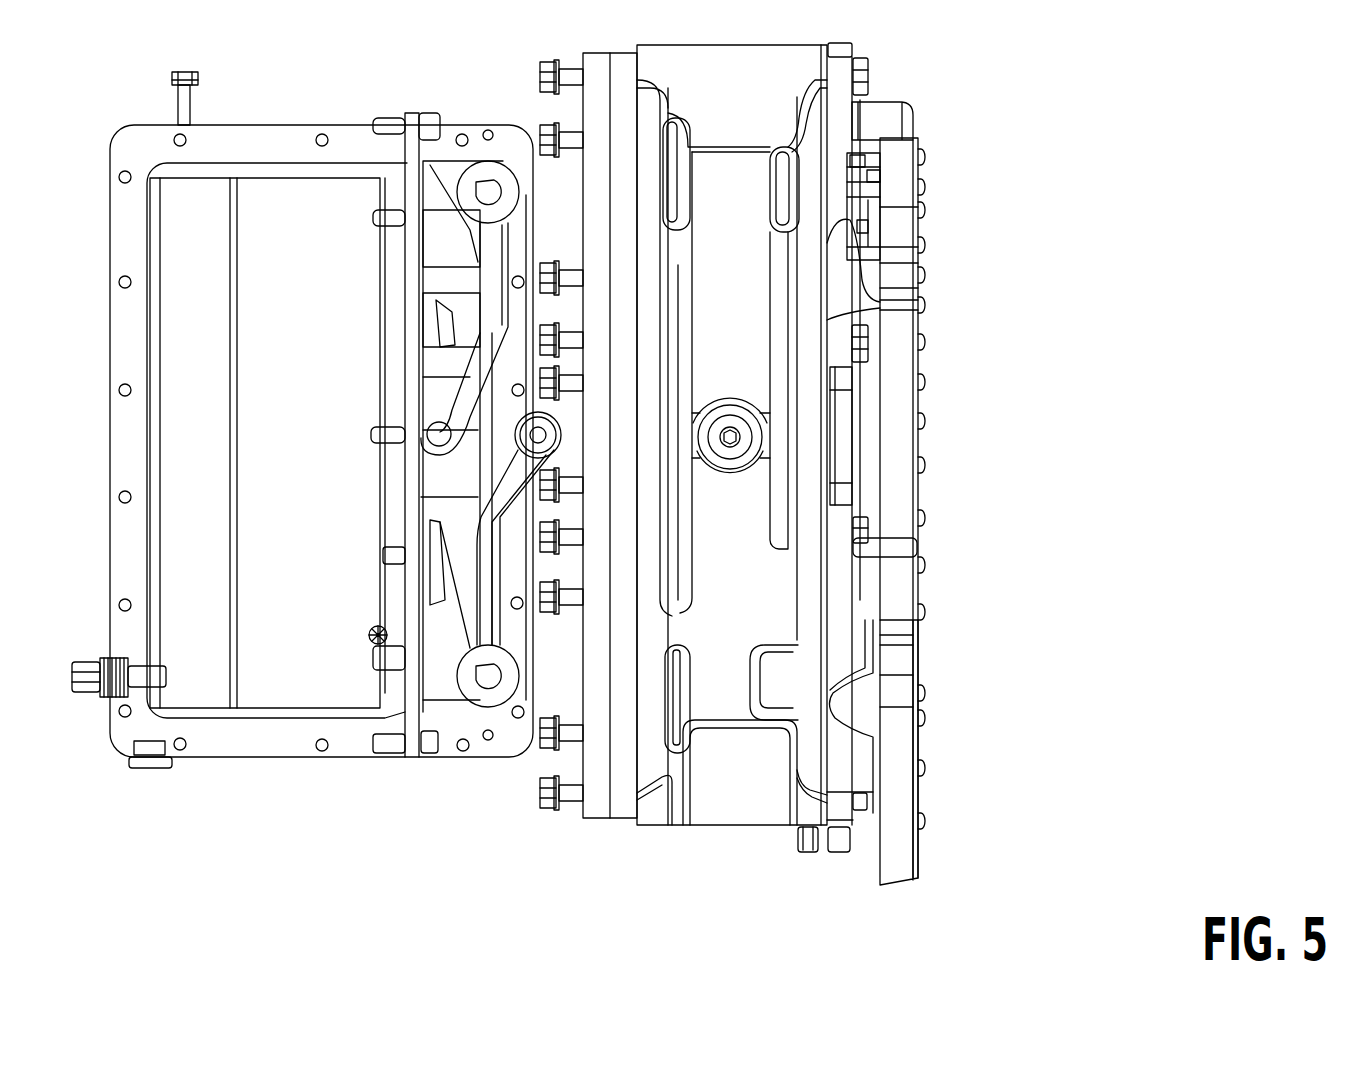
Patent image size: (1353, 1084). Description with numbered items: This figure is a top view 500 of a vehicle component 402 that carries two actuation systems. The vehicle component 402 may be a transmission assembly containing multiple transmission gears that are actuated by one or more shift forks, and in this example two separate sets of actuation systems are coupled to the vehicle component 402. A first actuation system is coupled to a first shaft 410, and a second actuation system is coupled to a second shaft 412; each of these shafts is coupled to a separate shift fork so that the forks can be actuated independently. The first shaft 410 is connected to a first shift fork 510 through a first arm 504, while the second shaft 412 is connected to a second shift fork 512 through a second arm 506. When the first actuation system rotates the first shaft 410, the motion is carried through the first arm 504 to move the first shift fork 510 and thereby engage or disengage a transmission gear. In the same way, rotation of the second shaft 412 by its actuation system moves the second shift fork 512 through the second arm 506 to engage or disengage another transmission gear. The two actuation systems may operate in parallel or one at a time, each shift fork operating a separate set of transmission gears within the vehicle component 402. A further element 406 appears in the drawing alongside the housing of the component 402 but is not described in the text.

The top view 500 is at (566, 464).
The vehicle component 402 is at (935, 280).
The panel 406 is at (905, 612).
The first shaft 410 is at (486, 188).
The second shaft 412 is at (487, 698).
The first arm 504 is at (455, 408).
The second arm 506 is at (487, 612).
The first shift fork 510 is at (430, 436).
The second shift fork 512 is at (530, 440).